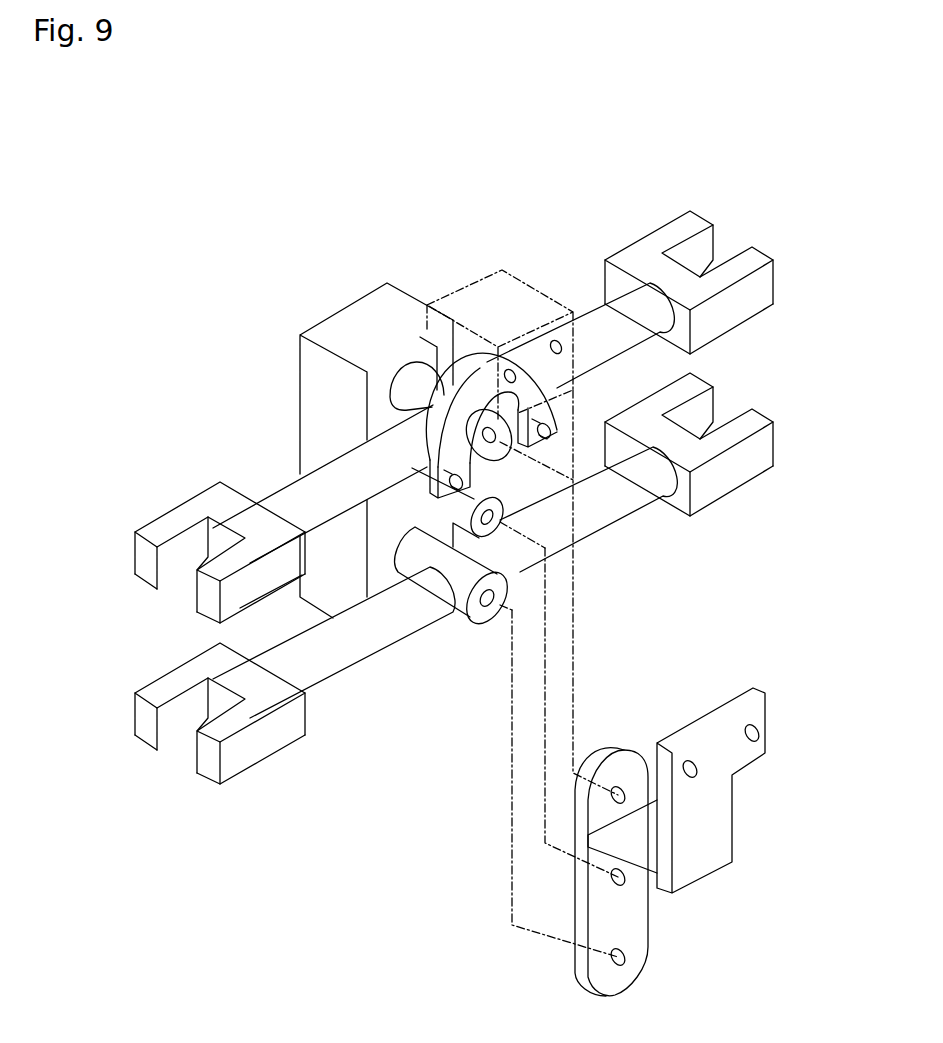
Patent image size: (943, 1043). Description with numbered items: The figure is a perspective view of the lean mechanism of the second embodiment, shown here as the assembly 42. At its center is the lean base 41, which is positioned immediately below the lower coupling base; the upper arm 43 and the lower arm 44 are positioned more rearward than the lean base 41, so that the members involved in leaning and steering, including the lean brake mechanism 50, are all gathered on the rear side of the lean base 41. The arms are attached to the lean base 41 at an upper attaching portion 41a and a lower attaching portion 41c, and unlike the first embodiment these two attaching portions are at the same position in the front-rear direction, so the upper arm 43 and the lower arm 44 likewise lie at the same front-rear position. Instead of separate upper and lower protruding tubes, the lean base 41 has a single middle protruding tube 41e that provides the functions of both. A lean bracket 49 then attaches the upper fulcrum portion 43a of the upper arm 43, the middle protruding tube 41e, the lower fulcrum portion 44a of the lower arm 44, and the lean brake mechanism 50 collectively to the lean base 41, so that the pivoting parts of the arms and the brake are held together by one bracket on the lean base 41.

The bracket assembly 42 is at (104, 214).
The lean base 41 is at (276, 362).
The upper attaching portion 41a is at (388, 375).
The lower attaching portion 41c is at (378, 583).
The middle protruding tube 41e is at (363, 547).
The upper arm 43 is at (592, 298).
The upper fulcrum portion 43a is at (450, 340).
The lower arm 44 is at (632, 498).
The lower fulcrum portion 44a is at (487, 628).
The lean bracket 49 is at (790, 701).
The lean brake mechanism 50 is at (455, 278).